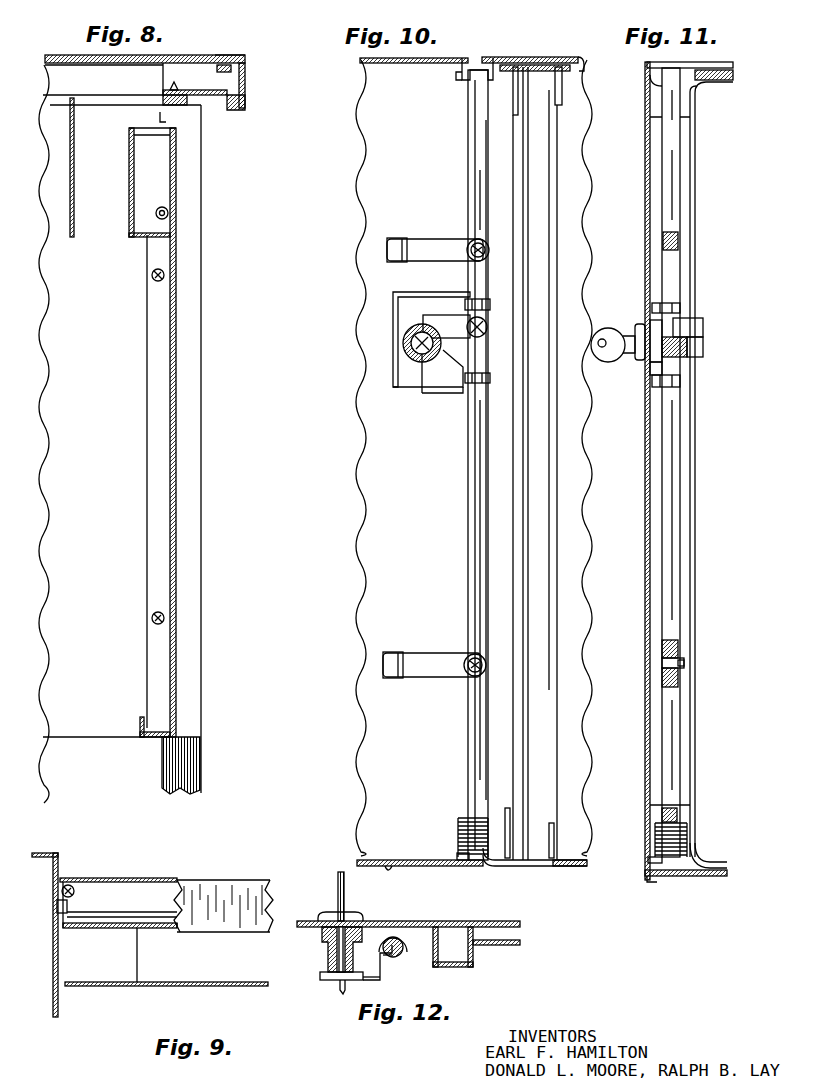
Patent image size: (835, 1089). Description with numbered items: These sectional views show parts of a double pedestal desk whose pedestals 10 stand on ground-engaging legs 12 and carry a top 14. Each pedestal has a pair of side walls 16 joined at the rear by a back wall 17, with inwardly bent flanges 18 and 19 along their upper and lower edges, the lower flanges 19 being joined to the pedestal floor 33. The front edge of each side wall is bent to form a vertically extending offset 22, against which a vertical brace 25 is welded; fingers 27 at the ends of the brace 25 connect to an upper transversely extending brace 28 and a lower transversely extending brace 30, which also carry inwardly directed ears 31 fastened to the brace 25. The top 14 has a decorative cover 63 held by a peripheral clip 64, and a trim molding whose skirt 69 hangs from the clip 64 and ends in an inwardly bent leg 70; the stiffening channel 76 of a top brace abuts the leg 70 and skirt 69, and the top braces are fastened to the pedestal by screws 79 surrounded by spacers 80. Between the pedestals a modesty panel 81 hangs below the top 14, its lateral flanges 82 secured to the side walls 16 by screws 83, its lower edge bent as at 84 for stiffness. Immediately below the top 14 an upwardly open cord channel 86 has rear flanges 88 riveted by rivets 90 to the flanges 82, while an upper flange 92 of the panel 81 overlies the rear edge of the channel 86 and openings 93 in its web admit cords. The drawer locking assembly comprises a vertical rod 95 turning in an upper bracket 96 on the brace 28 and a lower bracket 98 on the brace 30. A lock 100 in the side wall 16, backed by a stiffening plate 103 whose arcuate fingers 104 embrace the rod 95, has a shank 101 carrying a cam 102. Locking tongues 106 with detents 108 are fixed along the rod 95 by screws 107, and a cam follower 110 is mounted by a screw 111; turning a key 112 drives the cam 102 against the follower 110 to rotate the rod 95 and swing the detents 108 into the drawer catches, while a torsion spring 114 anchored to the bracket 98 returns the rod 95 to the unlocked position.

In FIG. 8, the pedestal 10 is at (207, 332).
In FIG. 9, the pedestal 10 is at (38, 846).
In FIG. 8, the ground-engaging leg 12 is at (190, 762).
In FIG. 8, the top 14 is at (222, 56).
In FIG. 8, the side wall 16 is at (93, 388).
In FIG. 9, the side wall 16 is at (58, 1006).
In FIG. 10, the side wall 16 is at (572, 585).
In FIG. 11, the side wall 16 is at (645, 512).
In FIG. 12, the side wall 16 is at (508, 921).
In FIG. 9, the back wall 17 is at (58, 853).
In FIG. 10, the upper flange 18 is at (434, 64).
In FIG. 10, the lower flange 19 is at (388, 866).
In FIG. 11, the lower flange 19 is at (650, 882).
In FIG. 10, the offset 22 is at (549, 232).
In FIG. 12, the offset 22 is at (485, 948).
In FIG. 10, the brace 25 is at (513, 541).
In FIG. 12, the brace 25 is at (448, 927).
In FIG. 10, the finger 27 is at (540, 74).
In FIG. 10, the transversely extending brace 28 is at (572, 58).
In FIG. 11, the transversely extending brace 28 is at (712, 62).
In FIG. 10, the transversely extending brace 30 is at (565, 868).
In FIG. 10, the ear 31 is at (512, 108).
In FIG. 11, the ear 31 is at (689, 113).
In FIG. 10, the pedestal floor 33 is at (422, 860).
In FIG. 11, the pedestal floor 33 is at (716, 876).
In FIG. 8, the decorative cover 63 is at (178, 55).
In FIG. 8, the clip 64 is at (235, 61).
In FIG. 8, the skirt 69 is at (246, 80).
In FIG. 8, the inwardly bent leg 70 is at (241, 108).
In FIG. 8, the stiffening channel 76 is at (236, 96).
In FIG. 8, the screw 79 is at (180, 84).
In FIG. 8, the spacer 80 is at (163, 98).
In FIG. 8, the modesty panel 81 is at (177, 436).
In FIG. 9, the modesty panel 81 is at (212, 880).
In FIG. 8, the flange 82 is at (147, 489).
In FIG. 8, the screw 83 is at (152, 616).
In FIG. 8, the bent lower edge 84 is at (140, 722).
In FIG. 9, the bent lower edge 84 is at (112, 928).
In FIG. 8, the cord channel 86 is at (74, 237).
In FIG. 9, the cord channel 86 is at (222, 986).
In FIG. 8, the flange 88 is at (160, 185).
In FIG. 9, the flange 88 is at (75, 910).
In FIG. 8, the rivet 90 is at (156, 220).
In FIG. 9, the rivet 90 is at (74, 889).
In FIG. 8, the flange 92 is at (161, 118).
In FIG. 9, the flange 92 is at (60, 905).
In FIG. 9, the opening 93 is at (125, 950).
In FIG. 10, the rod 95 is at (468, 181).
In FIG. 11, the rod 95 is at (672, 508).
In FIG. 12, the rod 95 is at (400, 956).
In FIG. 10, the bracket 96 is at (490, 58).
In FIG. 11, the bracket 96 is at (652, 86).
In FIG. 10, the bracket 98 is at (457, 855).
In FIG. 11, the bracket 98 is at (650, 860).
In FIG. 11, the lock 100 is at (638, 324).
In FIG. 11, the shank 101 is at (688, 352).
In FIG. 12, the shank 101 is at (330, 962).
In FIG. 10, the cam 102 is at (406, 354).
In FIG. 11, the cam 102 is at (703, 344).
In FIG. 12, the cam 102 is at (330, 980).
In FIG. 10, the stiffening plate 103 is at (412, 382).
In FIG. 11, the stiffening plate 103 is at (650, 368).
In FIG. 12, the stiffening plate 103 is at (324, 930).
In FIG. 10, the arcuate finger 104 is at (490, 303).
In FIG. 11, the arcuate finger 104 is at (678, 306).
In FIG. 12, the arcuate finger 104 is at (400, 933).
In FIG. 10, the locking tongue 106 is at (437, 239).
In FIG. 11, the locking tongue 106 is at (678, 650).
In FIG. 10, the screw 107 is at (470, 675).
In FIG. 11, the screw 107 is at (678, 238).
In FIG. 10, the detent 108 is at (397, 239).
In FIG. 10, the cam follower 110 is at (442, 315).
In FIG. 11, the cam follower 110 is at (700, 318).
In FIG. 12, the cam follower 110 is at (345, 992).
In FIG. 10, the screw 111 is at (488, 333).
In FIG. 12, the screw 111 is at (392, 958).
In FIG. 11, the key 112 is at (612, 330).
In FIG. 12, the key 112 is at (338, 885).
In FIG. 10, the torsion spring 114 is at (462, 818).
In FIG. 11, the torsion spring 114 is at (688, 838).